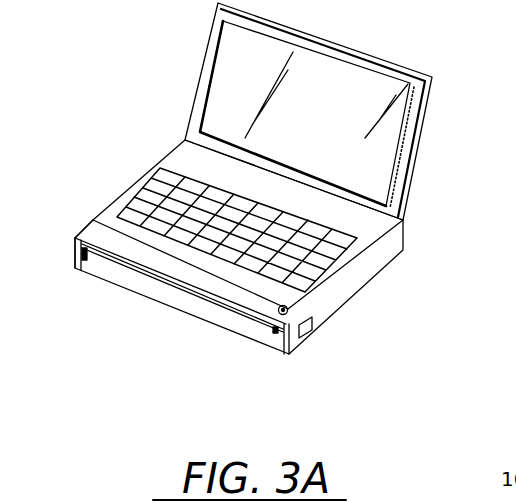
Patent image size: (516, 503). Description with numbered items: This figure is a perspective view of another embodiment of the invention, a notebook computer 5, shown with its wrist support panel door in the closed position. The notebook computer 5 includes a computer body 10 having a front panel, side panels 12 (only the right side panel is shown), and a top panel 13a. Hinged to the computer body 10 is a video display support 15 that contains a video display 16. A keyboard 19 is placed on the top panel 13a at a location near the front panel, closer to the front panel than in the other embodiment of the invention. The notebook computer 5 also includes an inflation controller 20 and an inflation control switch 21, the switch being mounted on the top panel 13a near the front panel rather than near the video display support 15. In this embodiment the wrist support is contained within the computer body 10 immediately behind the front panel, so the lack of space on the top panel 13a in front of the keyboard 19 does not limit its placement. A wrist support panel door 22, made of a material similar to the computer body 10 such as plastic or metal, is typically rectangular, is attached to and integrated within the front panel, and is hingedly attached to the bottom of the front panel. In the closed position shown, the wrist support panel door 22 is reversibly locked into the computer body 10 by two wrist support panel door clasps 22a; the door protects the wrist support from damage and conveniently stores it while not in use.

The notebook computer 5 is at (412, 227).
The computer body 10 is at (158, 163).
The side panel 12 is at (398, 250).
The top panel 13a is at (94, 221).
The video display support 15 is at (412, 156).
The video display 16 is at (398, 117).
The keyboard 19 is at (143, 198).
The inflation controller 20 is at (311, 328).
The inflation control switch 21 is at (289, 312).
The wrist support panel door 22 is at (243, 328).
The wrist support panel door clasp 22a is at (84, 256).